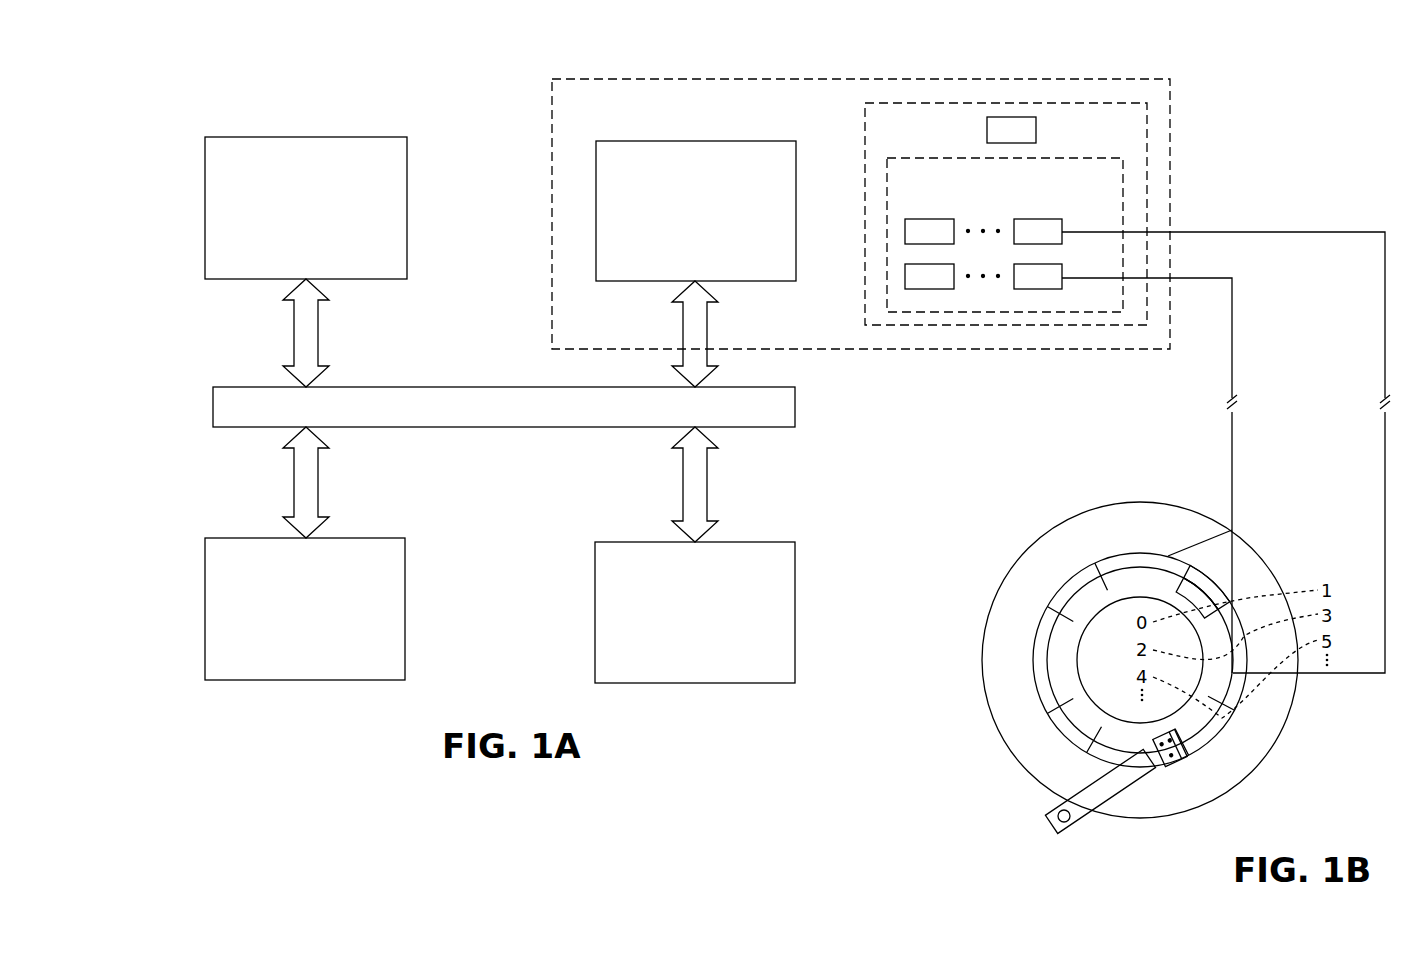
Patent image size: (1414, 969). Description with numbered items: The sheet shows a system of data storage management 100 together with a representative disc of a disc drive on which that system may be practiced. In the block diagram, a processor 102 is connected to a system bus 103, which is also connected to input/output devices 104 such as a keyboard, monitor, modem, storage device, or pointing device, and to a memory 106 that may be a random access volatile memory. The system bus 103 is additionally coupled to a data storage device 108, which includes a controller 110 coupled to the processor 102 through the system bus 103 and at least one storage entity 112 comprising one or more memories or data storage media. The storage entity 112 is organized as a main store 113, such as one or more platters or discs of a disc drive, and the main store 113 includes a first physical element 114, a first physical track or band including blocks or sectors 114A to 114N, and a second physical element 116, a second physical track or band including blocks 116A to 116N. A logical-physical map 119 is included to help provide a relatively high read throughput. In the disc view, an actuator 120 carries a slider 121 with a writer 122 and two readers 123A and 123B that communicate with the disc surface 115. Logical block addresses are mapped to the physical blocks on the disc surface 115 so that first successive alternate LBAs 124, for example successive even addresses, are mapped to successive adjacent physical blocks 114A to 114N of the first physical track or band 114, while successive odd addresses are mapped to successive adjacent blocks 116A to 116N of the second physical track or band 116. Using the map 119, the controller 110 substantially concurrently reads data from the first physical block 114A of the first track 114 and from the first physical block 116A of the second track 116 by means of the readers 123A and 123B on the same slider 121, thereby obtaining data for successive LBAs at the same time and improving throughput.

In FIG. 1A, the system of data storage management 100 is at (195, 94).
In FIG. 1A, the processor 102 is at (246, 137).
In FIG. 1A, the system bus 103 is at (246, 387).
In FIG. 1A, the input/output (I/O) devices 104 is at (246, 538).
In FIG. 1A, the memory 106 is at (636, 542).
In FIG. 1A, the data storage device 108 is at (578, 78).
In FIG. 1A, the controller 110 is at (636, 141).
In FIG. 1A, the storage entity 112 is at (1099, 103).
In FIG. 1A, the main store 113 is at (1107, 158).
In FIG. 1A, the first physical element 114 is at (1020, 461).
In FIG. 1A, the first physical block of the first physical track 114A is at (929, 276).
In FIG. 1B, the first physical block of the first physical track 114A is at (1208, 601).
In FIG. 1A, the last physical block of the first physical track 114N is at (1038, 276).
In FIG. 1B, the last physical block of the first physical track 114N is at (1146, 576).
In FIG. 1A, the second physical element 116 is at (1097, 439).
In FIG. 1A, the first physical block of the second physical track 116A is at (929, 231).
In FIG. 1B, the first physical block of the second physical track 116A is at (1198, 581).
In FIG. 1A, the last physical block of the second physical track 116N is at (1038, 231).
In FIG. 1B, the last physical block of the second physical track 116N is at (1108, 565).
In FIG. 1A, the logical-physical map 119 is at (1011, 130).
In FIG. 1B, the logical-physical map 119 is at (1338, 580).
In FIG. 1B, the disc surface 115 is at (1322, 710).
In FIG. 1B, the actuator 120 is at (1041, 836).
In FIG. 1B, the slider 121 is at (1192, 770).
In FIG. 1B, the writer 122 is at (1183, 753).
In FIG. 1B, the reader 123A is at (1158, 740).
In FIG. 1B, the reader 123B is at (1170, 757).
In FIG. 1B, the first successive alternate LBAs 124 is at (1136, 606).